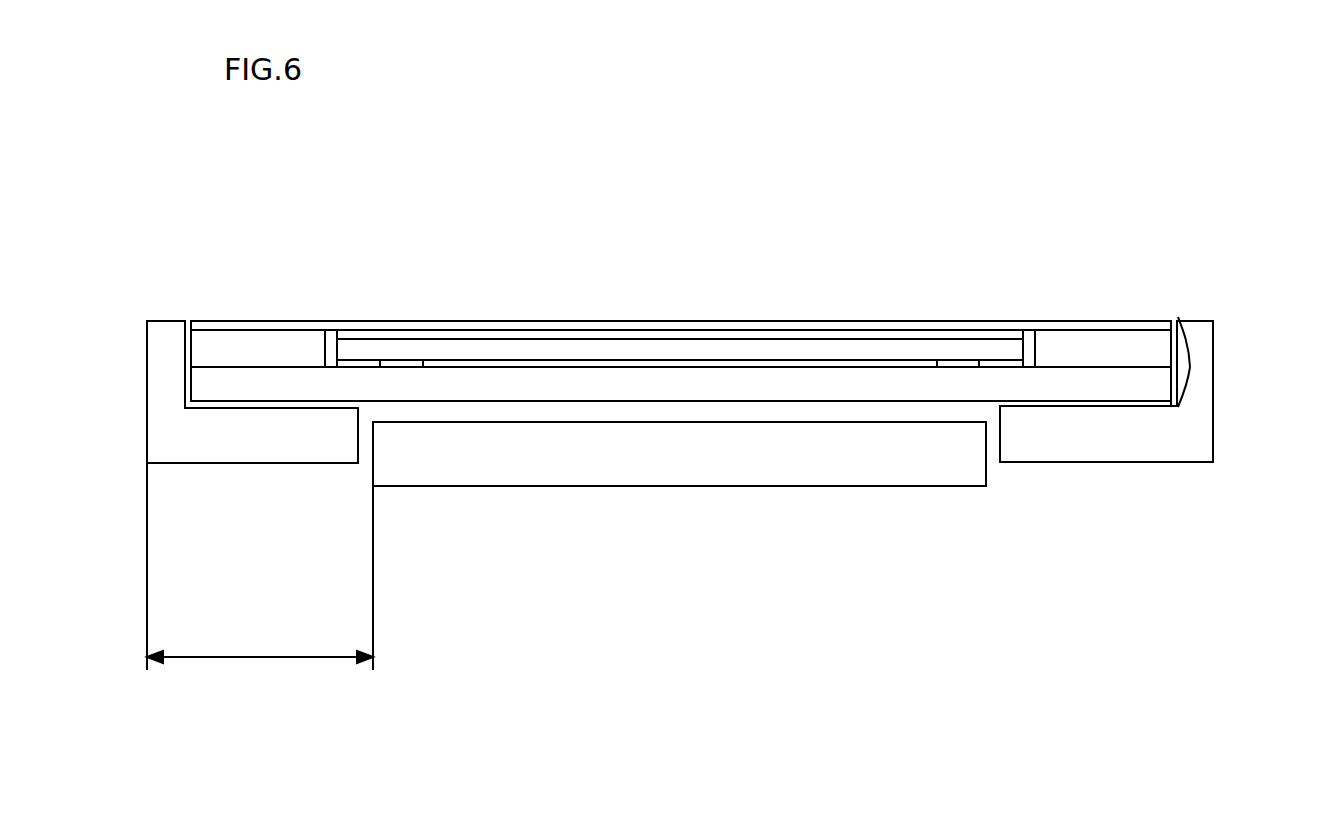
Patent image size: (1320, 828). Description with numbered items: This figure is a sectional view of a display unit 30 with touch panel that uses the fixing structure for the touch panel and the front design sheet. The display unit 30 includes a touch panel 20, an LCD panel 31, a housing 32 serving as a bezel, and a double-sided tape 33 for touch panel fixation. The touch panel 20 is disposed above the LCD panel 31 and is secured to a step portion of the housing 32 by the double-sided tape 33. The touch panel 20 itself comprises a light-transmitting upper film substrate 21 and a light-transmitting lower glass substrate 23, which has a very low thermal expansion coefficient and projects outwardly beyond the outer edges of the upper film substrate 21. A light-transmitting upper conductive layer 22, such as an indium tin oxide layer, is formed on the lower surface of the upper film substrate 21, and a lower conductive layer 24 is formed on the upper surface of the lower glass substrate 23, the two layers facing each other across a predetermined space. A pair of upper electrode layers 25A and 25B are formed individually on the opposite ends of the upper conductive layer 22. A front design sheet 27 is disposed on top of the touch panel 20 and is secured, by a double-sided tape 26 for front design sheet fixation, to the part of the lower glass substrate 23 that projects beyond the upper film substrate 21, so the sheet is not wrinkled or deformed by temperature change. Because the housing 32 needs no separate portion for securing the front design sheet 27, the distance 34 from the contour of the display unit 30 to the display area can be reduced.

The touch panel 20 is at (1190, 367).
The upper film substrate 21 is at (513, 350).
The upper conductive layer 22 is at (754, 360).
The lower glass substrate 23 is at (625, 388).
The lower conductive layer 24 is at (837, 367).
The upper electrode layer 25A is at (357, 363).
The upper electrode layer 25B is at (1000, 362).
The double-sided tape for front design sheet fixation 26 is at (245, 350).
The front design sheet 27 is at (982, 335).
The display unit with touch panel 30 is at (710, 186).
The LCD panel 31 is at (502, 468).
The housing 32 is at (178, 452).
The double-sided tape for touch panel fixation 33 is at (1148, 408).
The distance 34 is at (260, 583).